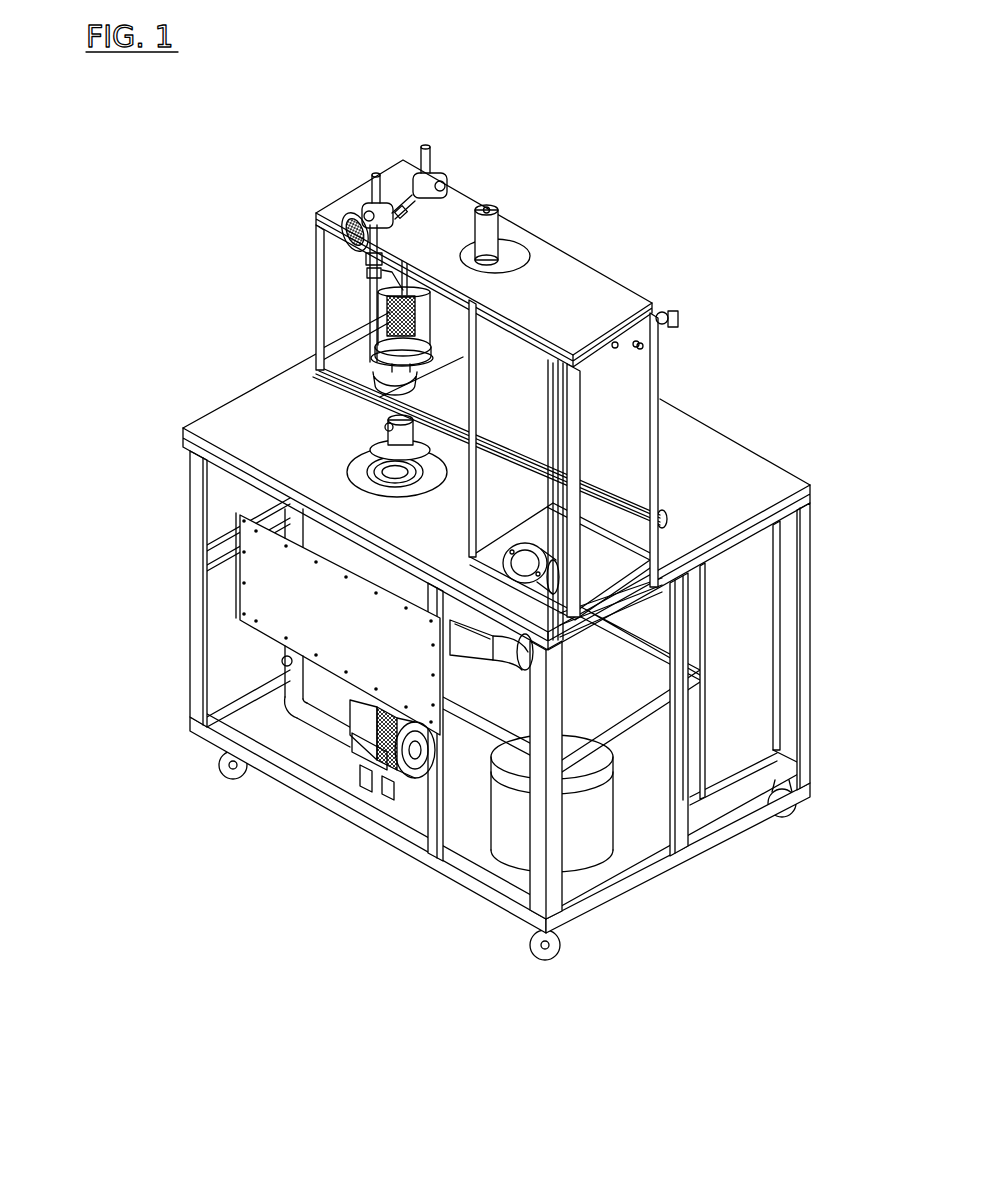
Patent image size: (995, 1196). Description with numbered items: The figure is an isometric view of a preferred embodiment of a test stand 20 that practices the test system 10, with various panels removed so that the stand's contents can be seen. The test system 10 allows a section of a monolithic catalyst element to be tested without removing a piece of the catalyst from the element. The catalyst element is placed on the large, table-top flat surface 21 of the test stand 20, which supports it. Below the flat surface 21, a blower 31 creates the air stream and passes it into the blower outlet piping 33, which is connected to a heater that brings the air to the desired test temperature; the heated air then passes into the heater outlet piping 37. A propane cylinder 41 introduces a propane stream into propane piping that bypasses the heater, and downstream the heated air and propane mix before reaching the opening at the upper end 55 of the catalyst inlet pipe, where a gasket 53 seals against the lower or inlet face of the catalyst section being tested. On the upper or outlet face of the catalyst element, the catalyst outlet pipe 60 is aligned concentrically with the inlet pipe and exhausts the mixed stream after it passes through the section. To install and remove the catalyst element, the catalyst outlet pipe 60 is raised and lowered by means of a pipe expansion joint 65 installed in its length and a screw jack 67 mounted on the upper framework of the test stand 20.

The test system 10 is at (563, 220).
The test stand 20 is at (783, 463).
The flat surface 21 is at (248, 430).
The blower 31 is at (373, 783).
The blower outlet piping 33 is at (310, 725).
The heater outlet piping 37 is at (507, 650).
The propane cylinder 41 is at (522, 808).
The gasket 53 is at (285, 500).
The upper end 55 is at (370, 473).
The catalyst outlet pipe 60 is at (383, 443).
The pipe expansion joint 65 is at (395, 318).
The screw jack 67 is at (372, 272).